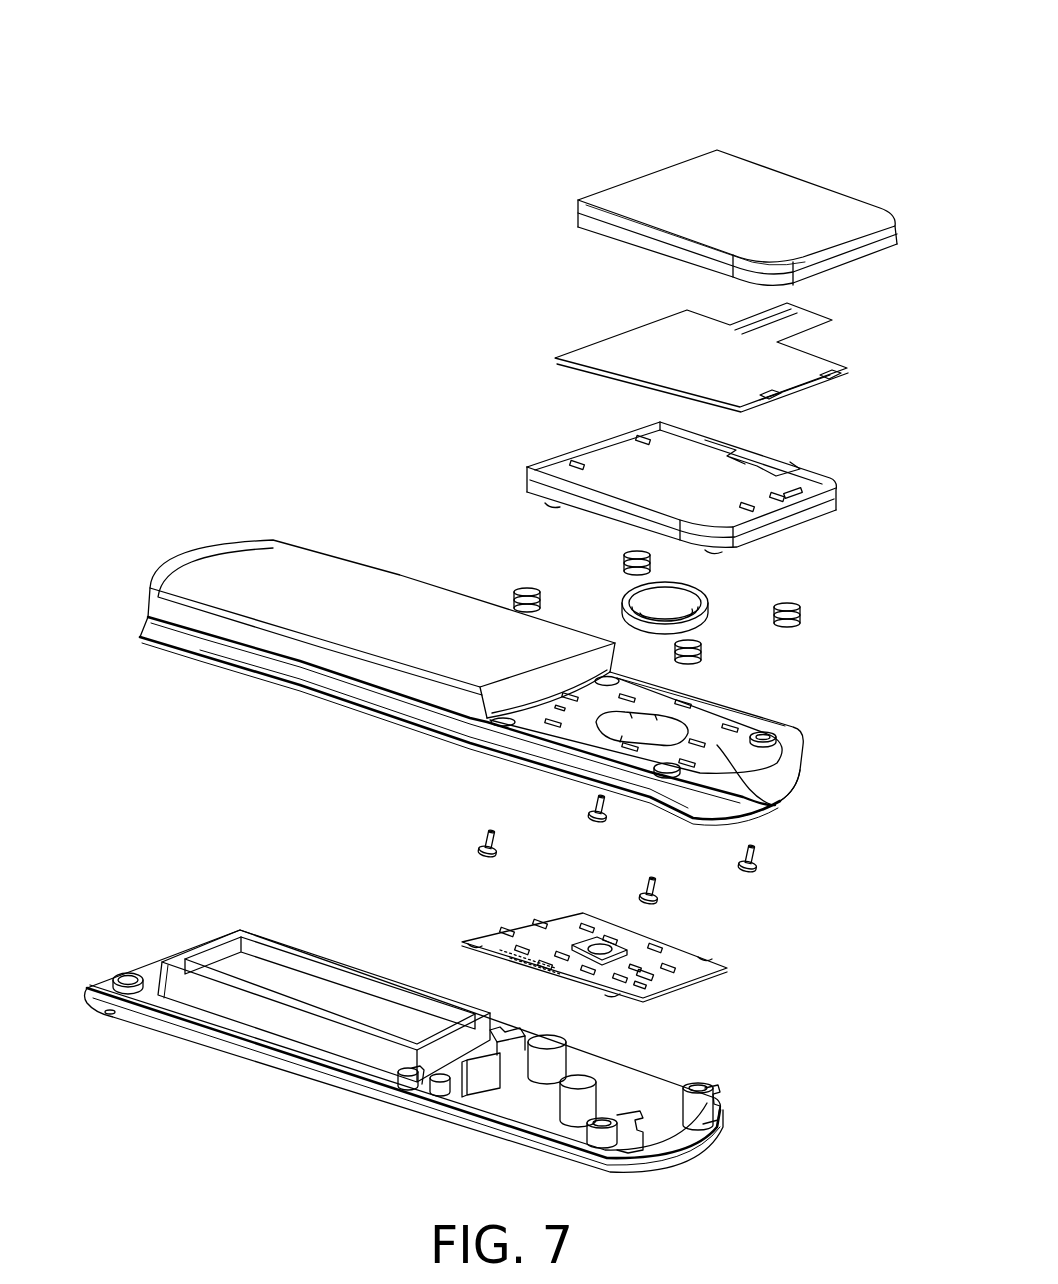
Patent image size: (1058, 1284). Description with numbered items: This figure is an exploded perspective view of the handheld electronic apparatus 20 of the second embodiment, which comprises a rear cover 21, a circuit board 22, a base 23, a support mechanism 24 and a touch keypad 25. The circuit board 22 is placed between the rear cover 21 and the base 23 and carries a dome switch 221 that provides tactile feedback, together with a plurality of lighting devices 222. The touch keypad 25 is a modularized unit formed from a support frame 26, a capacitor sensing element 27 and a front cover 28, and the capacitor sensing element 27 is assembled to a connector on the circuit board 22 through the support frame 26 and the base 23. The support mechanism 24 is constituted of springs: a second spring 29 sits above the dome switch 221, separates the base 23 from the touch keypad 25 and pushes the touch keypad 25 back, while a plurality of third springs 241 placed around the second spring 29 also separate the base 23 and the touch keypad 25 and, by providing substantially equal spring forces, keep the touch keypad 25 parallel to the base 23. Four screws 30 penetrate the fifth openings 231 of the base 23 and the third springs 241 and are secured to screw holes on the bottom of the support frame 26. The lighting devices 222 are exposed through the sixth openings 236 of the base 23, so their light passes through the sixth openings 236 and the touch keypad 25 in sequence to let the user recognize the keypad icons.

The handheld electronic apparatus 20 is at (843, 101).
The rear cover 21 is at (726, 1112).
The circuit board 22 is at (726, 967).
The dome switch 221 is at (616, 949).
The lighting devices 222 is at (665, 990).
The base 23 is at (790, 759).
The fifth openings 231 is at (775, 731).
The sixth openings 236 is at (752, 800).
The support mechanism 24 is at (822, 619).
The third springs 241 is at (705, 651).
The touch keypad 25 is at (453, 198).
The support frame 26 is at (526, 482).
The capacitor sensing element 27 is at (556, 356).
The front cover 28 is at (577, 212).
The second spring 29 is at (706, 601).
The screws 30 is at (756, 858).